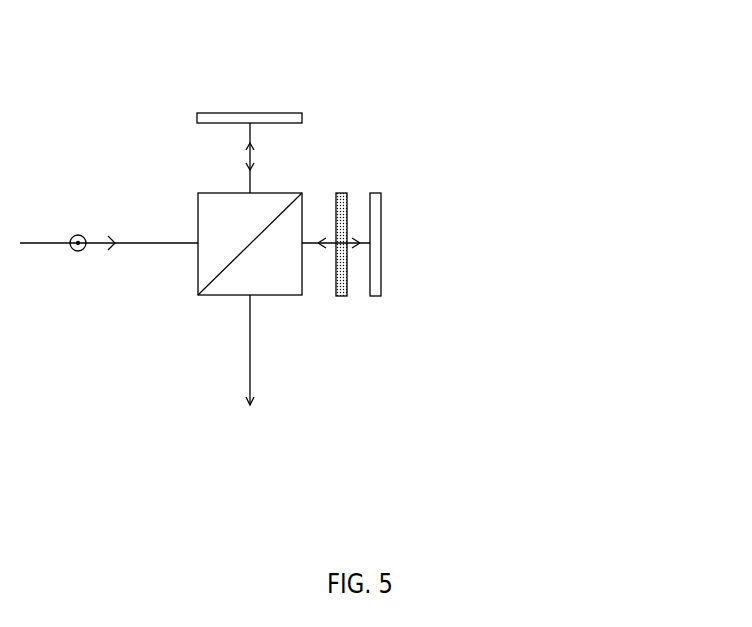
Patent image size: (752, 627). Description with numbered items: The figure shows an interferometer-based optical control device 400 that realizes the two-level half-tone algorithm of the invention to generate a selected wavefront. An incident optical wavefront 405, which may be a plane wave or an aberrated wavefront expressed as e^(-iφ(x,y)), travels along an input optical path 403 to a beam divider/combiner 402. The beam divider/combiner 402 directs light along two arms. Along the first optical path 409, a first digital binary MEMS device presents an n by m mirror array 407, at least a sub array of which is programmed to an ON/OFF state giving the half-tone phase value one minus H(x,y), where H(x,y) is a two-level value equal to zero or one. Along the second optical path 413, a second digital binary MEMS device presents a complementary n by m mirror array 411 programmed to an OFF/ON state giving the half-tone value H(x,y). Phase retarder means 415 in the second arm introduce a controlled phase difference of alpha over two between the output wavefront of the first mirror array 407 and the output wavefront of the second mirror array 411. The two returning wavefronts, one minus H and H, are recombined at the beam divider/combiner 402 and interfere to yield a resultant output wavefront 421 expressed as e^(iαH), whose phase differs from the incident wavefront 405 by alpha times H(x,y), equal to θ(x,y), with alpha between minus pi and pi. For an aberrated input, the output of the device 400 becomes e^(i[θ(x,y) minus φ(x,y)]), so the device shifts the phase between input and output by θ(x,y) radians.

The optical control device 400 is at (702, 60).
The beam divider/combiner 402 is at (190, 277).
The input optical path 403 is at (109, 236).
The incident optical wavefront 405 is at (79, 230).
The mirror array of first digital binary MEMS device M1 407 is at (272, 99).
The M1 optical path 409 is at (271, 158).
The mirror array of second digital binary MEMS device M2 411 is at (385, 290).
The M2 optical path 413 is at (354, 245).
The phase retarder means 415 is at (337, 308).
The resultant output wavefront 421 is at (295, 375).